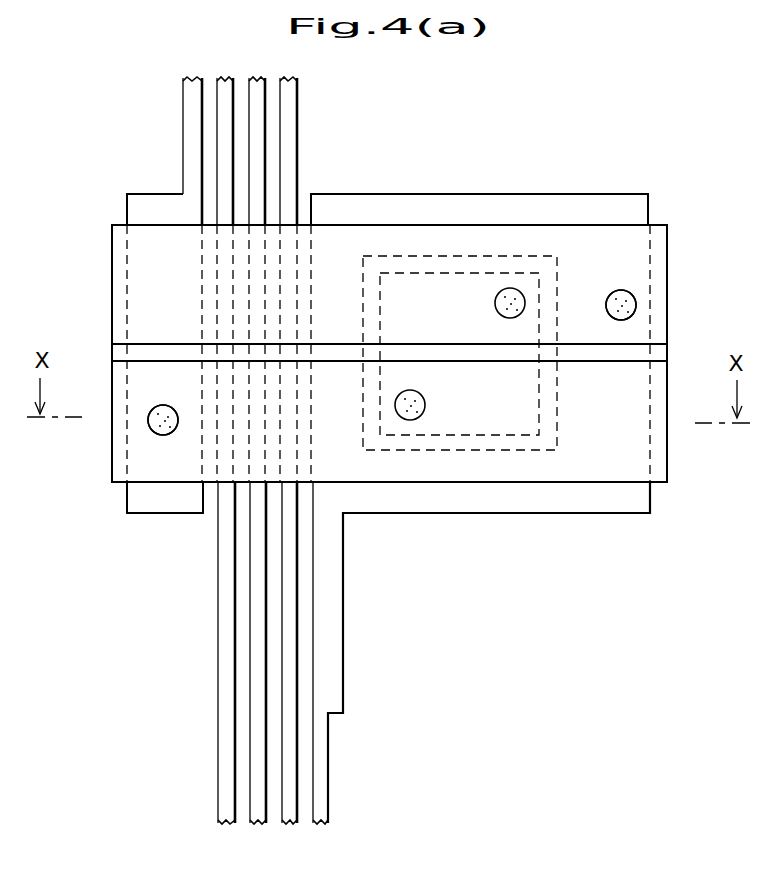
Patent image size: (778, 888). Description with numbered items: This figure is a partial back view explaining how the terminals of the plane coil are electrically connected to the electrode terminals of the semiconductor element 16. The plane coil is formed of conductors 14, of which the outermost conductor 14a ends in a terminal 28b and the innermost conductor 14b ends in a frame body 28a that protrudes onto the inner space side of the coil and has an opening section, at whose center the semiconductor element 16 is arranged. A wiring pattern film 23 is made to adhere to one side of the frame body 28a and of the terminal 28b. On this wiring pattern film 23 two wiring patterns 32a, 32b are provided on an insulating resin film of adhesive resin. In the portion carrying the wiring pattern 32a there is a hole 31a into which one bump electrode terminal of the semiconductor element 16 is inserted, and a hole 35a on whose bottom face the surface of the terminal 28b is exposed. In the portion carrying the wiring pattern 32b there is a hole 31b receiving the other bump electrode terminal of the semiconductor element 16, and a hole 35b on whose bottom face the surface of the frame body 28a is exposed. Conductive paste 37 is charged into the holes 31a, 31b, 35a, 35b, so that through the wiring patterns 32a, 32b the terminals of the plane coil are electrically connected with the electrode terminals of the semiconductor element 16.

The conductor 14 is at (258, 93).
The outermost conductor 14a is at (193, 118).
The innermost conductor 14b is at (321, 790).
The semiconductor element 16 is at (400, 276).
The wiring pattern film 23 is at (681, 261).
The frame body 28a is at (606, 215).
The terminal 28b is at (162, 498).
The hole 31a is at (410, 420).
The hole 31b is at (511, 319).
The wiring pattern 32a is at (610, 466).
The wiring pattern 32b is at (517, 236).
The hole 35a is at (158, 432).
The hole 35b is at (631, 318).
The conductive paste 37 is at (160, 410).